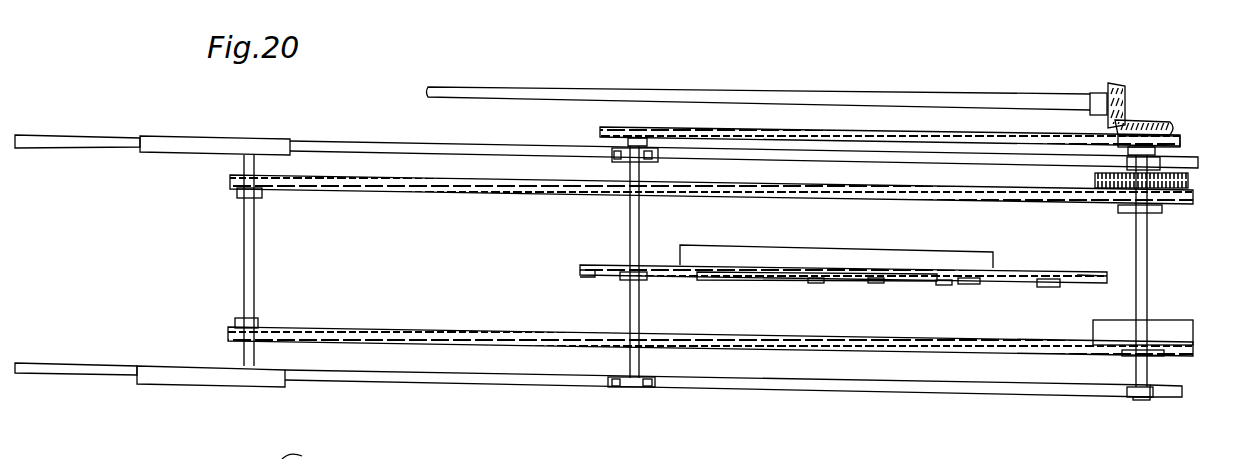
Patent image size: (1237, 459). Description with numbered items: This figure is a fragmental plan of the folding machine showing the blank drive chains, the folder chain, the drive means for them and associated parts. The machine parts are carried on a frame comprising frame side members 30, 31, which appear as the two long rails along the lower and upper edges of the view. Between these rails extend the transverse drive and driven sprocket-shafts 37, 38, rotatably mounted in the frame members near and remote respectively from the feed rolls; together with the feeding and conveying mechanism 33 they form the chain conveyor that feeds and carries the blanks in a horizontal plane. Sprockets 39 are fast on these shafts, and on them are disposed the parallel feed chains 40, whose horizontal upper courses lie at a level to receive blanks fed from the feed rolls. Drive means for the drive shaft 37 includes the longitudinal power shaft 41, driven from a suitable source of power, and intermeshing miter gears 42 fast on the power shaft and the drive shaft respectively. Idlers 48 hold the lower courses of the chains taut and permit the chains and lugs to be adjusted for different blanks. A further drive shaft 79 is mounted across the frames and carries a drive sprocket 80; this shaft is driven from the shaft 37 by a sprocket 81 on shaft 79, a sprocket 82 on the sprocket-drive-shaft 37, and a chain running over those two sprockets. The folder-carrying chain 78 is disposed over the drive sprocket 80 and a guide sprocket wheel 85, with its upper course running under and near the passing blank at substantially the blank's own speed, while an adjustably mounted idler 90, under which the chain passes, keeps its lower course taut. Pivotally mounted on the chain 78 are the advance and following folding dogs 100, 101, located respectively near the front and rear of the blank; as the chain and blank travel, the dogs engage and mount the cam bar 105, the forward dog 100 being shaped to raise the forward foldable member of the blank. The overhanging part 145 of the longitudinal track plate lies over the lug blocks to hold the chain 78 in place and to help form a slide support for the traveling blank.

The frame side member 30 is at (502, 380).
The frame side member 31 is at (497, 144).
The feeding and conveying mechanism 33 is at (1168, 330).
The drive sprocket-shaft 37 is at (1149, 271).
The driven sprocket-shaft 38 is at (255, 270).
The sprocket 39 is at (1155, 212).
The feed chain 40 is at (760, 198).
The longitudinal power shaft 41 is at (787, 74).
The miter gears 42 is at (1142, 120).
The idler 48 is at (951, 353).
The folder-carrying chain 78 is at (1031, 272).
The drive shaft 79 is at (641, 233).
The drive sprocket 80 is at (655, 278).
The sprocket 81 is at (628, 141).
The sprocket 82 is at (1178, 152).
The guide sprocket wheel 85 is at (985, 282).
The idler 90 is at (1070, 280).
The advance folding dog 100 is at (816, 280).
The following folding dog 101 is at (944, 284).
The cam bar 105 is at (876, 282).
The overhanging part of track plate 145 is at (802, 256).